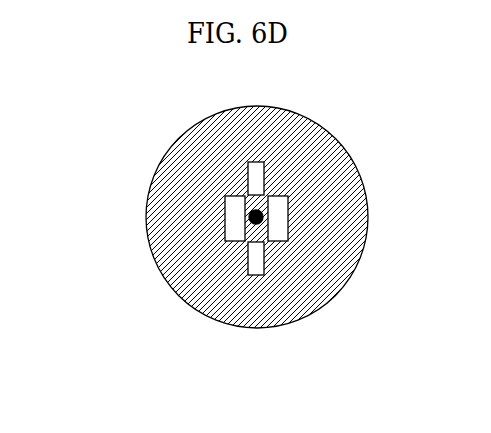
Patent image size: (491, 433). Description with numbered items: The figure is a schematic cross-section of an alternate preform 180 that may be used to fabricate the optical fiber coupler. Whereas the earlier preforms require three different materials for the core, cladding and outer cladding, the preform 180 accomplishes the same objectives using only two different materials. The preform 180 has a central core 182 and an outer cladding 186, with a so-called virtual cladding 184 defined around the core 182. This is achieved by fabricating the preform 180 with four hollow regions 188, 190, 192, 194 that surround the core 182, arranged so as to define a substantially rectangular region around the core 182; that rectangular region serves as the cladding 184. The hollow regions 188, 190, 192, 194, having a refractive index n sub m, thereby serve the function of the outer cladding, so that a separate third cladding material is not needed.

The preform 180 is at (113, 108).
The core 182 is at (256, 217).
The virtual cladding 184 is at (258, 226).
The outer cladding 186 is at (146, 200).
The hollow region 188 is at (266, 170).
The hollow region 190 is at (289, 218).
The hollow region 192 is at (257, 275).
The hollow region 194 is at (224, 215).